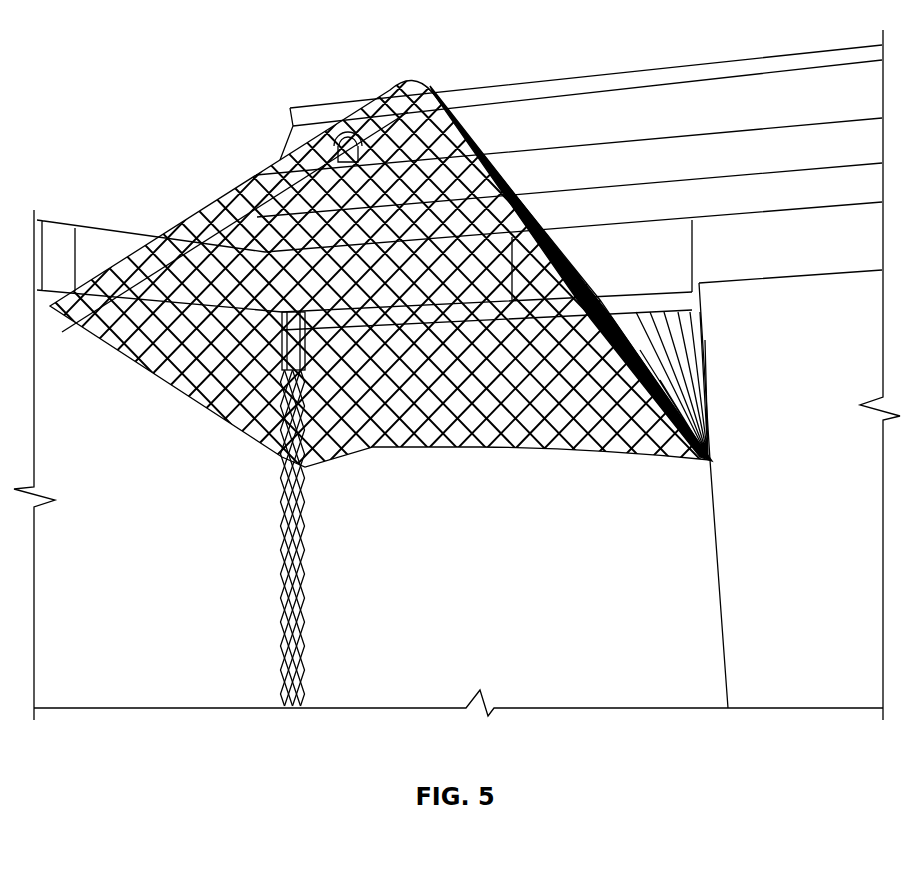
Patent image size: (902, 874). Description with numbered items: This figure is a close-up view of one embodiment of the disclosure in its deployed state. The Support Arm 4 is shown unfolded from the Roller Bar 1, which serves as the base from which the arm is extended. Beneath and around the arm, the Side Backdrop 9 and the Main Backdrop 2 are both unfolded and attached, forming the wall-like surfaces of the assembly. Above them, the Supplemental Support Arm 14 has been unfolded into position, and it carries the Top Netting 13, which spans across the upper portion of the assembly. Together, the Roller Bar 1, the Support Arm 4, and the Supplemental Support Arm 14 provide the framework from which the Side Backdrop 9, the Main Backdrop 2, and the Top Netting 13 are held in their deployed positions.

The Roller Bar 1 is at (820, 247).
The Main Backdrop 2 is at (602, 650).
The Support Arm 4 is at (115, 247).
The Side Backdrop 9 is at (143, 647).
The Top Netting 13 is at (197, 233).
The Supplemental Support Arm 14 is at (268, 197).